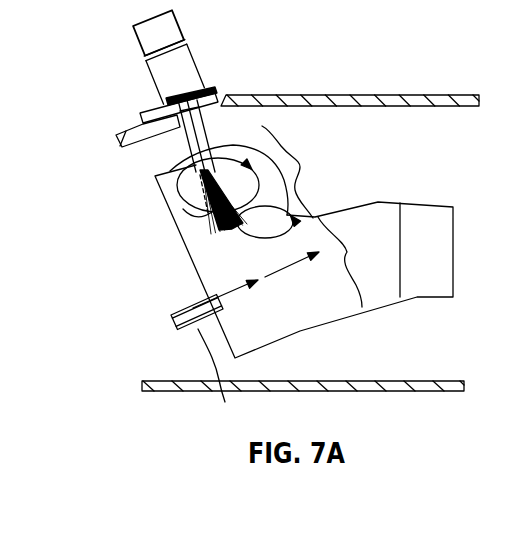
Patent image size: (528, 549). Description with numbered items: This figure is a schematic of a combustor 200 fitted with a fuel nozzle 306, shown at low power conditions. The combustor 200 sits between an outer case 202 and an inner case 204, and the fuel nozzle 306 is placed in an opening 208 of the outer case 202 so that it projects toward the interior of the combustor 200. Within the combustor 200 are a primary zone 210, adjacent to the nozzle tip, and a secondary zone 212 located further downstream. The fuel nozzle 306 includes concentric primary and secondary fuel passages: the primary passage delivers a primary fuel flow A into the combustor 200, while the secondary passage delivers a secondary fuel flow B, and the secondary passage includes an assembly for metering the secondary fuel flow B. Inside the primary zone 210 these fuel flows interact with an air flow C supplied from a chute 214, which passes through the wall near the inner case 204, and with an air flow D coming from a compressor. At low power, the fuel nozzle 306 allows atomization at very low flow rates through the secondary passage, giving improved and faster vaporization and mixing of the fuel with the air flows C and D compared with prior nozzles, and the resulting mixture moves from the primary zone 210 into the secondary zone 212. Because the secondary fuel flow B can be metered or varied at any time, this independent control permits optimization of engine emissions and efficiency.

The combustor 200 is at (197, 272).
The outer case 202 is at (393, 103).
The inner case 204 is at (407, 389).
The opening 208 is at (149, 144).
The primary zone 210 is at (258, 172).
The secondary zone 212 is at (354, 262).
The chute 214 is at (220, 384).
The fuel nozzle 306 is at (153, 82).
The primary fuel flow A is at (177, 213).
The secondary fuel flow B is at (229, 158).
The air flow C is at (168, 330).
The air flow D is at (167, 186).